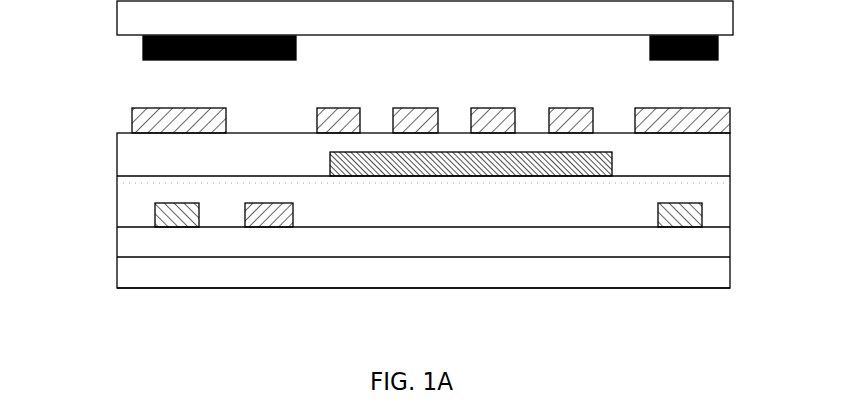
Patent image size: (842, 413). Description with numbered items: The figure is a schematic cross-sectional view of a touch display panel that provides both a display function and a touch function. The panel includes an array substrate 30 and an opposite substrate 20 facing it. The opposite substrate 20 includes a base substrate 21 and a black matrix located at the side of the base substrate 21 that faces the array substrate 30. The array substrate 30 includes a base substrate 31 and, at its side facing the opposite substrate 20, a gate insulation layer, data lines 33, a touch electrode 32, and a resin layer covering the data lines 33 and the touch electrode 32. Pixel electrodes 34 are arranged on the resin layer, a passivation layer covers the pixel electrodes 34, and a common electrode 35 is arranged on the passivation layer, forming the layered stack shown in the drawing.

The opposite substrate 20 is at (741, 1).
The base substrate 21 is at (122, 18).
The array substrate 30 is at (740, 108).
The base substrate 31 is at (133, 280).
The touch electrode 32 is at (207, 273).
The data lines 33 is at (162, 213).
The pixel electrodes 34 is at (330, 165).
The common electrode 35 is at (180, 121).